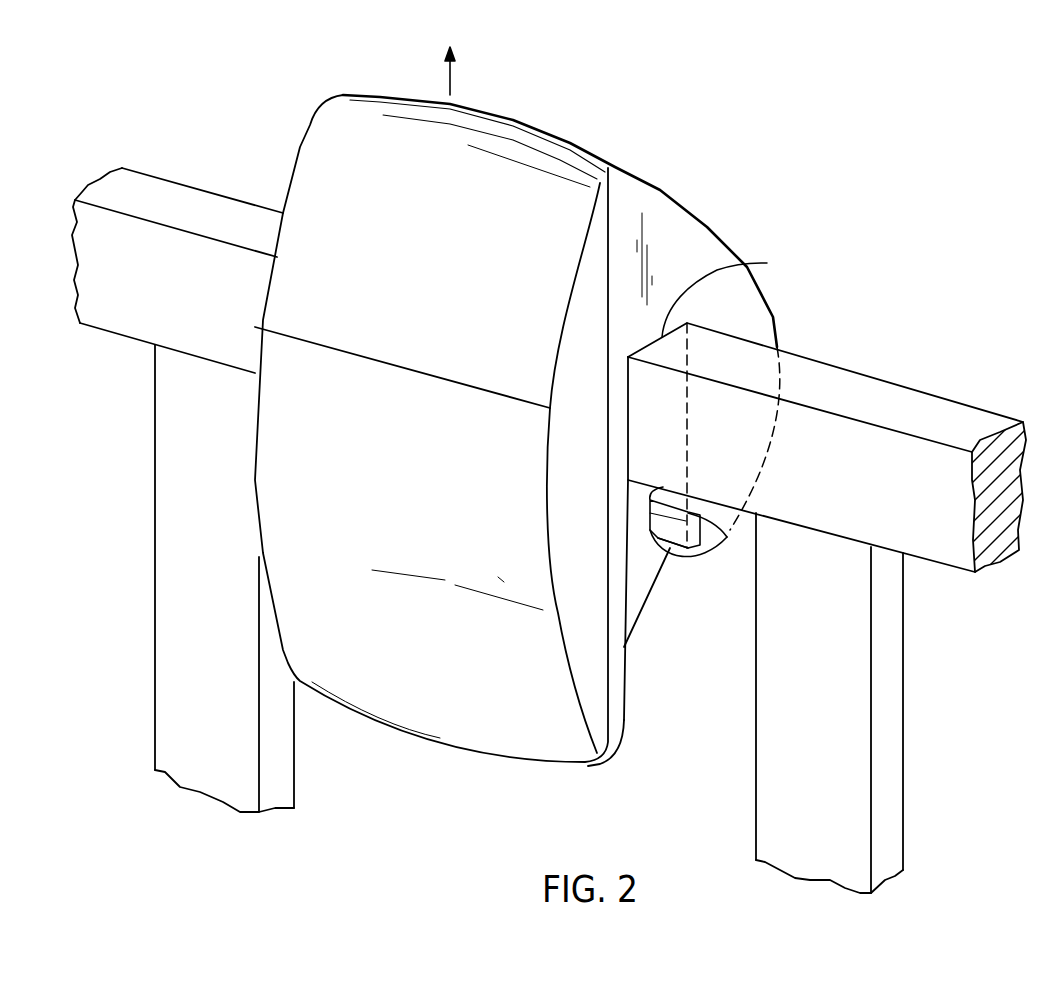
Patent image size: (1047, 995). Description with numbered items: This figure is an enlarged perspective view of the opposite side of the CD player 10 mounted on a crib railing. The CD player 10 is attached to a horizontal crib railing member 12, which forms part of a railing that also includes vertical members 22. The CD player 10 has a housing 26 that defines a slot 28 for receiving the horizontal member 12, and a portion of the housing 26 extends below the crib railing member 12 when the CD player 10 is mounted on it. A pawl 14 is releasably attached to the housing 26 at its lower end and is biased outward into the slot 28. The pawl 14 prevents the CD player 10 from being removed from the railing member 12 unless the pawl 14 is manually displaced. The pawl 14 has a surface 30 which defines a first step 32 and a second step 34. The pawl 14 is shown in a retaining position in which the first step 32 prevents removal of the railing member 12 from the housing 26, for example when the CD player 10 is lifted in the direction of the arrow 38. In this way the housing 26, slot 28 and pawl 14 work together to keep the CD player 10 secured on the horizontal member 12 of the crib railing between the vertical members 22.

The CD player 10 is at (636, 148).
The crib railing member 12 is at (903, 405).
The pawl 14 is at (640, 617).
The vertical member 22 is at (173, 407).
The housing 26 is at (618, 722).
The slot 28 is at (767, 263).
The surface 30 is at (705, 557).
The first step 32 is at (713, 530).
The second step 34 is at (680, 557).
The arrow 38 is at (445, 60).